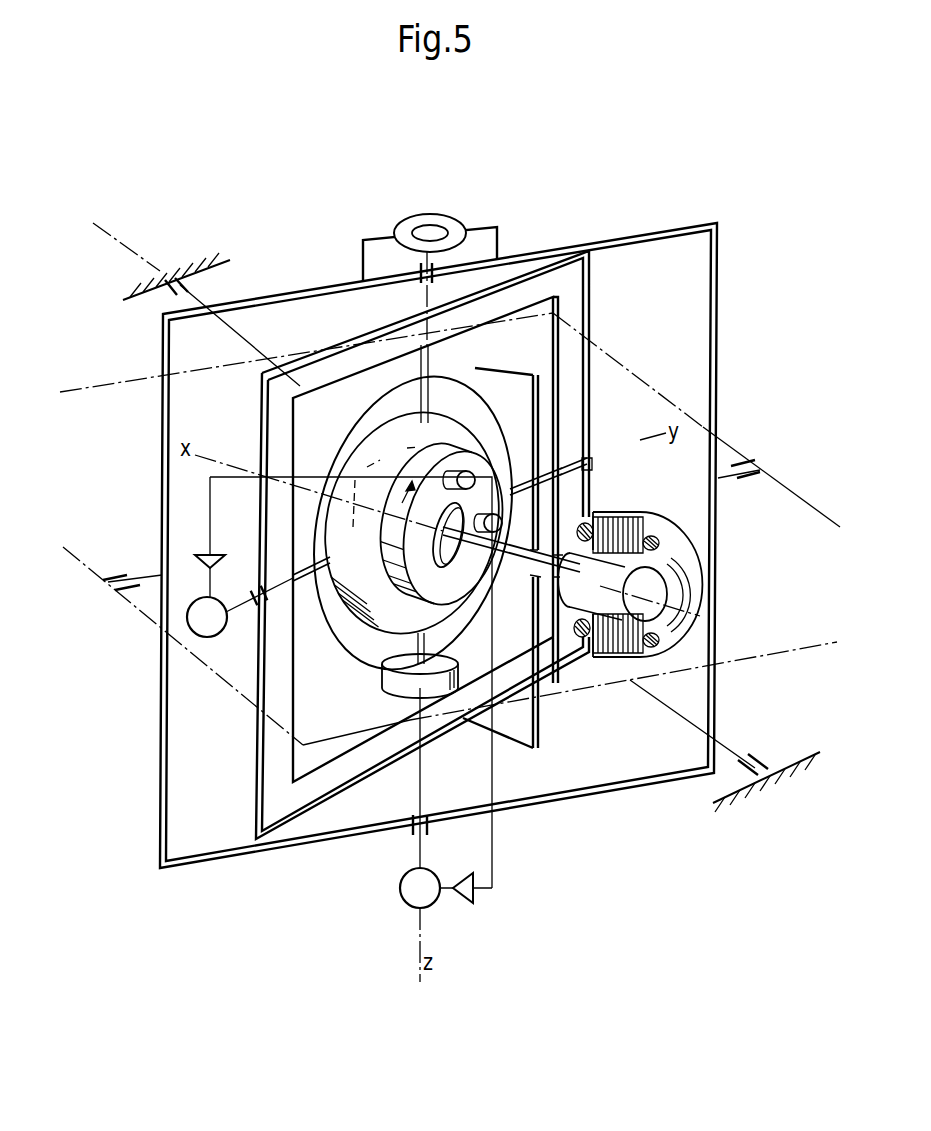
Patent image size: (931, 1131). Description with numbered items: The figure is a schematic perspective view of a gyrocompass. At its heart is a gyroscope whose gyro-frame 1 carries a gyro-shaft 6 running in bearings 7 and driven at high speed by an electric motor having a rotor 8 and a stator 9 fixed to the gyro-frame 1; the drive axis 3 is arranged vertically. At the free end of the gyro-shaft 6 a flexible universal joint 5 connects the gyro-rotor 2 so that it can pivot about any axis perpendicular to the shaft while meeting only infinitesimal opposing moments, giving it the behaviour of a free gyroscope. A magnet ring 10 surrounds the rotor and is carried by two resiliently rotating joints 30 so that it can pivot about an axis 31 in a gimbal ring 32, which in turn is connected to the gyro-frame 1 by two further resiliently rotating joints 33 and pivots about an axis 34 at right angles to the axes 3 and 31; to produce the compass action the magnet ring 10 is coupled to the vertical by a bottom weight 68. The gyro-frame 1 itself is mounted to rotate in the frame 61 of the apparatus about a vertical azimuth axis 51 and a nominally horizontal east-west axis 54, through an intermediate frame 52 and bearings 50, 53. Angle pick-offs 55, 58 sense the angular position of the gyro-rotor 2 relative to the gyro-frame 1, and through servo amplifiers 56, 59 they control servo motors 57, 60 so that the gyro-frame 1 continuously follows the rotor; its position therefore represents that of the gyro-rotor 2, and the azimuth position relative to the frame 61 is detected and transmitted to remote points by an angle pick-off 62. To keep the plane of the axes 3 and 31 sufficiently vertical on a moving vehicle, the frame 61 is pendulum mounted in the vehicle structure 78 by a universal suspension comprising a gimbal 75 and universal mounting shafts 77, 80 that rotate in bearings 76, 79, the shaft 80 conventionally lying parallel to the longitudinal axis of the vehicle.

The gyro-frame 1 is at (513, 367).
The gyro-rotor 2 is at (483, 507).
The drive axis 3 is at (210, 463).
The universal joint 5 is at (458, 527).
The gyro-shaft 6 is at (530, 573).
The bearings 7 is at (558, 588).
The motor rotor 8 is at (614, 583).
The motor stator 9 is at (620, 540).
The magnet ring 10 is at (379, 458).
The resiliently rotating joints 30 is at (425, 645).
The pivot axis 31 is at (428, 370).
The gimbal ring 32 is at (490, 407).
The resiliently rotating joints 33 is at (522, 488).
The pivot axis 34 is at (600, 448).
The bearings 50 is at (430, 816).
The azimuth axis 51 is at (434, 306).
The intermediate frame 52 is at (590, 300).
The bearings 53 is at (586, 462).
The east-west axis 54 is at (272, 578).
The angle pick-off 55 is at (496, 510).
The servo amplifier 56 is at (475, 897).
The servo motor 57 is at (423, 909).
The angle pick-off 58 is at (467, 468).
The servo amplifier 59 is at (202, 552).
The servo motor 60 is at (208, 638).
The frame of the apparatus 61 is at (720, 272).
The angle pick-off 62 is at (452, 222).
The bottom weight 68 is at (383, 688).
The gimbal 75 is at (796, 494).
The bearings 76 is at (108, 576).
The universal mounting shaft 77 is at (150, 576).
The vehicle structure 78 is at (780, 780).
The bearings 79 is at (760, 763).
The universal mounting shaft 80 is at (713, 737).